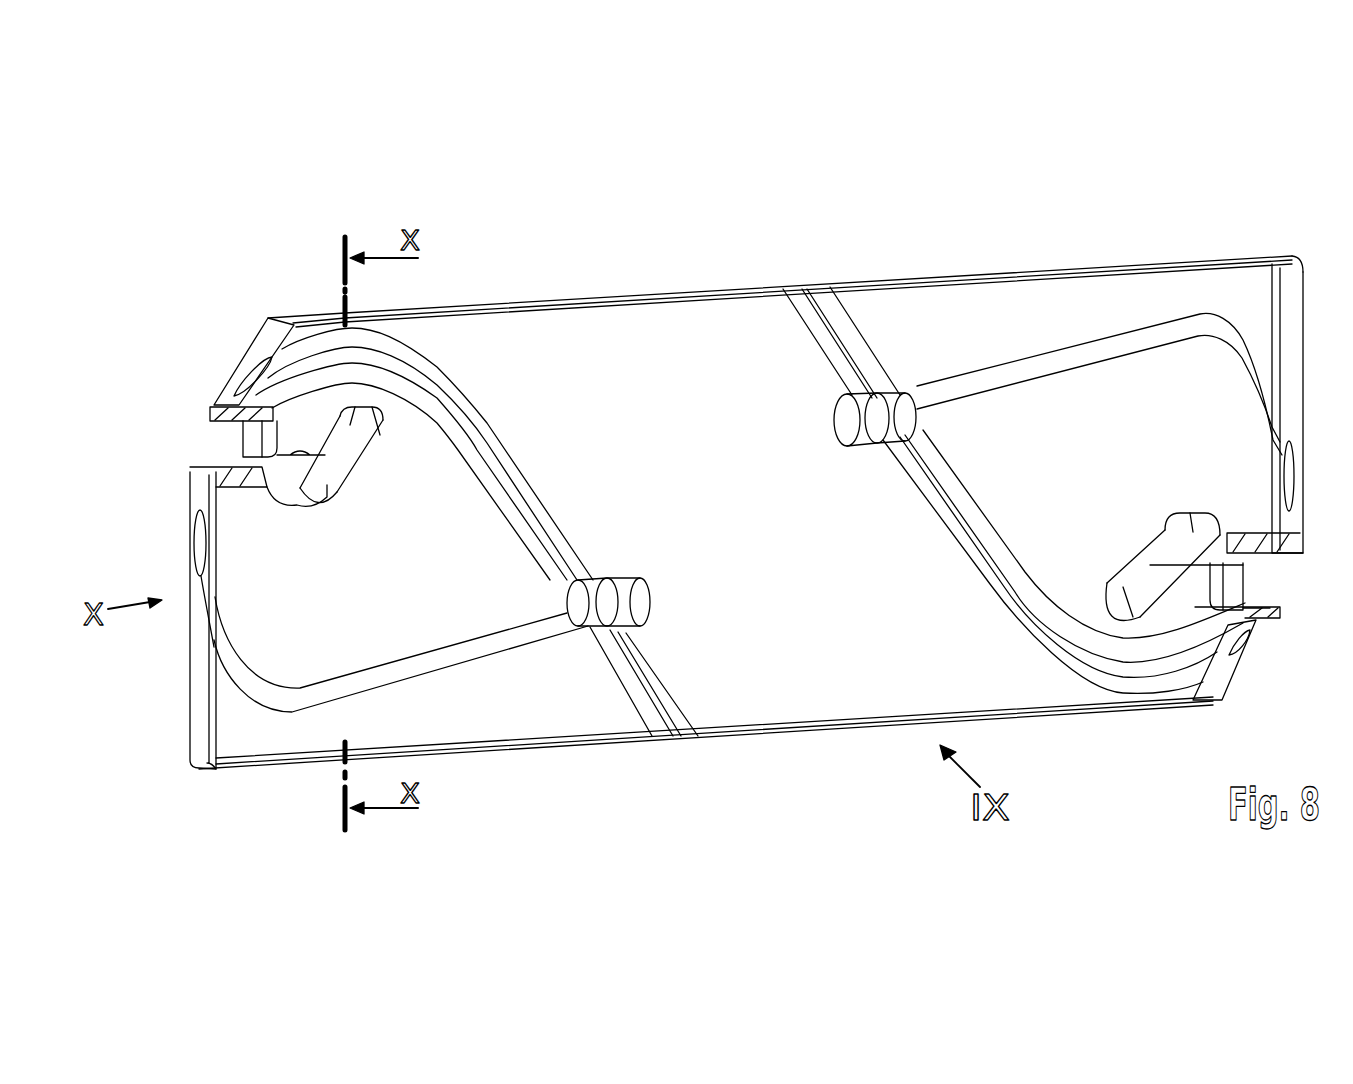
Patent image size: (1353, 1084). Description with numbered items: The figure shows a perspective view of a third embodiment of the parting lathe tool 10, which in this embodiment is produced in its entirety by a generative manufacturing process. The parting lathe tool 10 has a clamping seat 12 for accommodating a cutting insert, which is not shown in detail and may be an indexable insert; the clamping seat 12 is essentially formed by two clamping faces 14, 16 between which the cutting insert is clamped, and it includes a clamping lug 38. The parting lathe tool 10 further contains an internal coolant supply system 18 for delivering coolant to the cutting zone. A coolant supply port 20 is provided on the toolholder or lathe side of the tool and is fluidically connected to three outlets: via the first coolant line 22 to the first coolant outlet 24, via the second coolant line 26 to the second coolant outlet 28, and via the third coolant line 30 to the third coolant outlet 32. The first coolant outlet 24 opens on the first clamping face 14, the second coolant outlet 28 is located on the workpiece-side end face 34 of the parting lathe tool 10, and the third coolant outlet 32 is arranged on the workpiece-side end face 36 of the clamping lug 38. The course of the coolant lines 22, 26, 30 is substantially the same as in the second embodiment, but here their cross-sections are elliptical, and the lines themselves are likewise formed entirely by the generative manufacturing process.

The parting lathe tool 10 is at (683, 241).
The clamping seat 12 is at (226, 464).
The first clamping face 14 is at (243, 427).
The second clamping face 16 is at (197, 467).
The internal coolant supply system 18 is at (468, 710).
The coolant supply port 20 is at (617, 593).
The first coolant line 22 is at (527, 553).
The first coolant outlet 24 is at (247, 440).
The second coolant line 26 is at (305, 712).
The second coolant outlet 28 is at (200, 547).
The third coolant line 30 is at (488, 421).
The third coolant outlet 32 is at (240, 380).
The end face 34 is at (200, 655).
The workpiece-side end face 36 is at (267, 340).
The clamping lug 38 is at (267, 309).